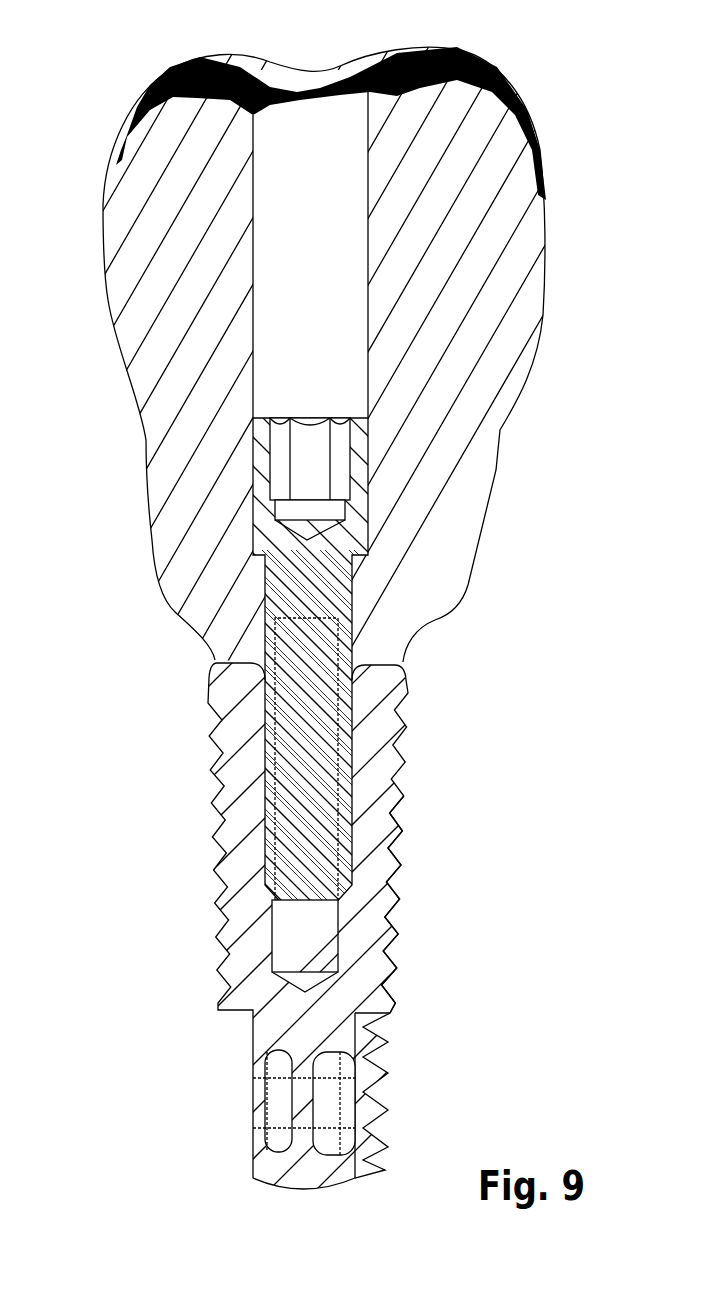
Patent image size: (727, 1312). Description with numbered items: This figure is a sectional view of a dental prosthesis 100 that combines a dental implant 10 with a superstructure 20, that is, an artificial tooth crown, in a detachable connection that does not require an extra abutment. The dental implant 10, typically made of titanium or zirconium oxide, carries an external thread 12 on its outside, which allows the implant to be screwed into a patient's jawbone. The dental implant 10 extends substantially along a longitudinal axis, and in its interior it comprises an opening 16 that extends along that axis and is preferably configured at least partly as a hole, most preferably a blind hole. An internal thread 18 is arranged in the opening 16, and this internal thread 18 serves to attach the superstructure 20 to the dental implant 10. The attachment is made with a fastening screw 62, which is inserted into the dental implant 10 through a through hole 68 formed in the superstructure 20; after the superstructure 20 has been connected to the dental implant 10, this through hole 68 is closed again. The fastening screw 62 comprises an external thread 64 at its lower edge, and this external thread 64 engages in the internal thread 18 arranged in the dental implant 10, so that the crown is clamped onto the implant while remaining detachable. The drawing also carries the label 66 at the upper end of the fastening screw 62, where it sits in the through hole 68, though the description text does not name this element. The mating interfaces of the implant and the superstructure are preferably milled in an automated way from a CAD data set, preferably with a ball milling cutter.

The dental prosthesis 100 is at (555, 69).
The superstructure 20 is at (510, 282).
The through hole 68 is at (300, 277).
The screw head 66 is at (268, 468).
The fastening screw 62 is at (208, 683).
The external thread 64 is at (255, 808).
The dental implant 10 is at (385, 737).
The external thread 12 is at (398, 870).
The opening 16 is at (320, 937).
The internal thread 18 is at (255, 933).